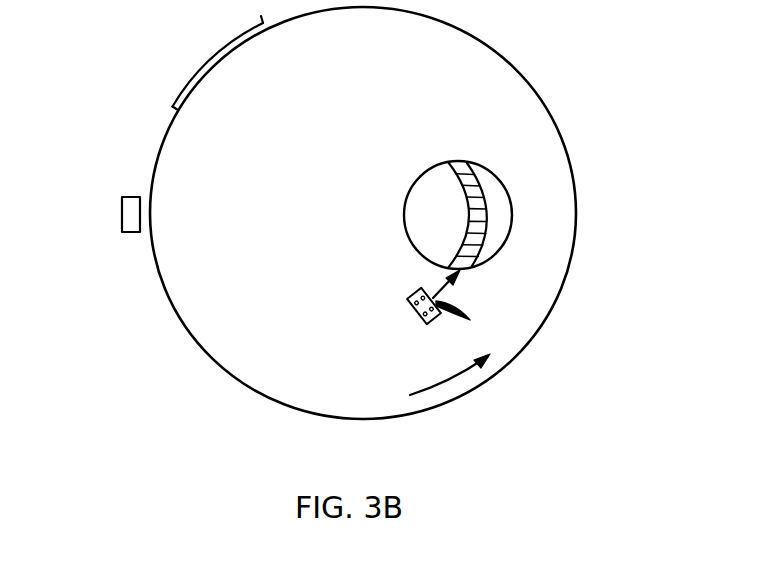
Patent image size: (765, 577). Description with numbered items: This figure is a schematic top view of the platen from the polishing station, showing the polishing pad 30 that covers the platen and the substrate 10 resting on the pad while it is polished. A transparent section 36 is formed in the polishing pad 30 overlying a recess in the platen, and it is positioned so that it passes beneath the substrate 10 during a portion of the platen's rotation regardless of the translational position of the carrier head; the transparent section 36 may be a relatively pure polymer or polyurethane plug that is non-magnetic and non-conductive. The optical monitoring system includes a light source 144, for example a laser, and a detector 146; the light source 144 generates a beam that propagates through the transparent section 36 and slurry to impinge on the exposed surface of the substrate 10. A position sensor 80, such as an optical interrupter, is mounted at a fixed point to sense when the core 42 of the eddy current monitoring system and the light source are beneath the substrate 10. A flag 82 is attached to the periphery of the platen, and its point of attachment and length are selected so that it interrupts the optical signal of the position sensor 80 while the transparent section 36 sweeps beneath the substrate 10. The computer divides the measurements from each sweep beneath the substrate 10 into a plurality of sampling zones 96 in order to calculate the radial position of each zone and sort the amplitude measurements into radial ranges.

The polishing pad 30 is at (560, 133).
The flag 82 is at (210, 53).
The position sensor 80 is at (122, 213).
The substrate 10 is at (418, 175).
The sampling zones 96 is at (483, 210).
The light source 144 is at (412, 296).
The detector 146 is at (418, 312).
The core 42 is at (470, 320).
The transparent section 36 is at (430, 322).